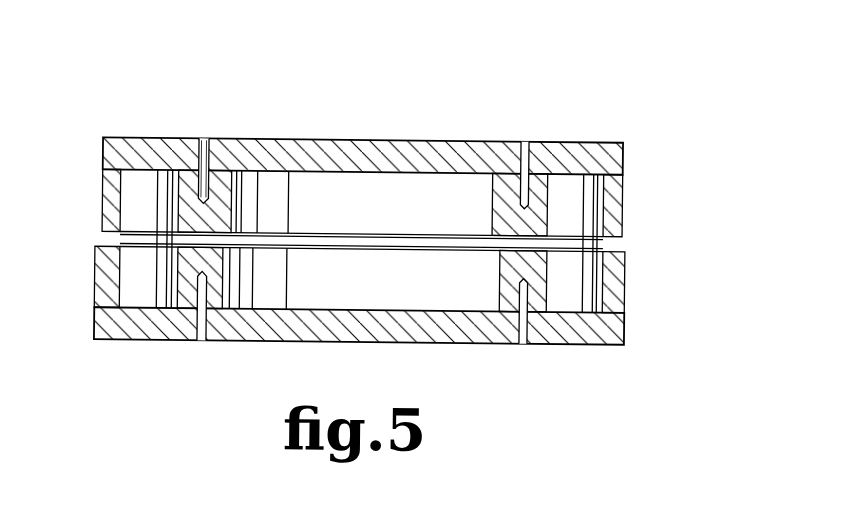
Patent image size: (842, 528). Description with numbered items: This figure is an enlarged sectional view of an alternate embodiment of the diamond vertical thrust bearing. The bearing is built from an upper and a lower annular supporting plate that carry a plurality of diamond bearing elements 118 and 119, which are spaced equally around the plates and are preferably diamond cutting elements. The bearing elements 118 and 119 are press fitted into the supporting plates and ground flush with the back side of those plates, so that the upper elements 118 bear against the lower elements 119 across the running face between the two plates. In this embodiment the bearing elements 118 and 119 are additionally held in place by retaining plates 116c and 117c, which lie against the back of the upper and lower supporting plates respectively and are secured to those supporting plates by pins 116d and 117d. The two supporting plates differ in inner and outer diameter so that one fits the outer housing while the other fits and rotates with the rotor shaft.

The retaining plate 116c is at (102, 158).
The pin 116d is at (217, 140).
The retaining plate 117c is at (96, 328).
The pin 117d is at (215, 343).
The diamond bearing element 118 is at (597, 210).
The diamond bearing element 119 is at (587, 270).